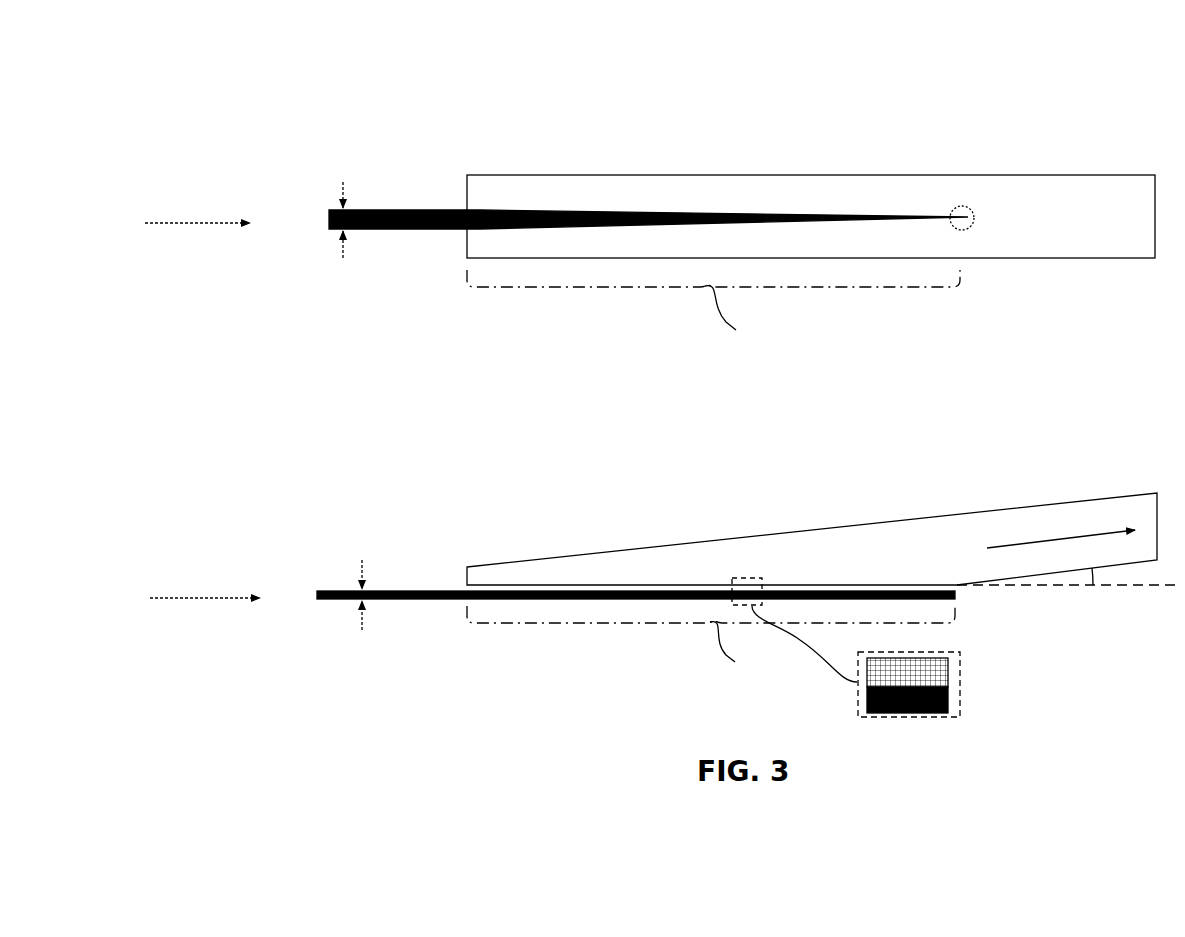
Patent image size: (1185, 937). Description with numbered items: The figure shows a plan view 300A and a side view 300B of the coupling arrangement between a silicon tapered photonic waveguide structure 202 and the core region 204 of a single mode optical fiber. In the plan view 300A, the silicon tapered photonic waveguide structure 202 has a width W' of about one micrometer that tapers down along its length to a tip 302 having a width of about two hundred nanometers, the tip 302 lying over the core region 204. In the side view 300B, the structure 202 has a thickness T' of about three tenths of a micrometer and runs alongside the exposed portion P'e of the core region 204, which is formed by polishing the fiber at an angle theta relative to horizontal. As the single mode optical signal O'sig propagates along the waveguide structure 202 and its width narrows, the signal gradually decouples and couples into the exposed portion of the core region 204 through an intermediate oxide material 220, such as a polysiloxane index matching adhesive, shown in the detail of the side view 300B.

The plan view 300A is at (260, 42).
The side view 300B is at (270, 481).
The silicon tapered photonic waveguide structure 202 is at (410, 209).
The core region 204 is at (812, 380).
The tip 302 is at (975, 216).
The intermediate oxide material 220 is at (940, 670).